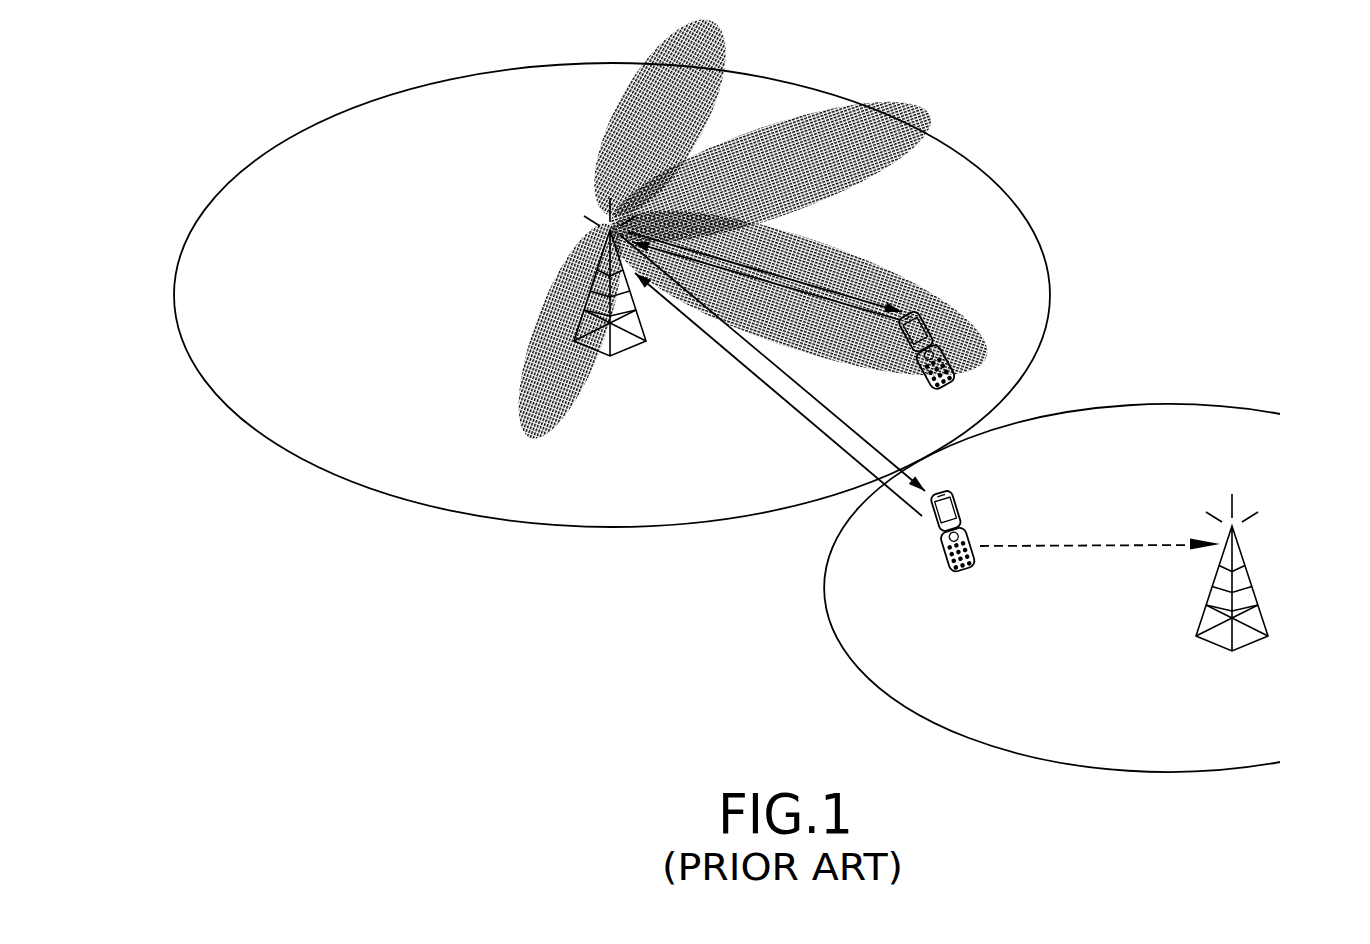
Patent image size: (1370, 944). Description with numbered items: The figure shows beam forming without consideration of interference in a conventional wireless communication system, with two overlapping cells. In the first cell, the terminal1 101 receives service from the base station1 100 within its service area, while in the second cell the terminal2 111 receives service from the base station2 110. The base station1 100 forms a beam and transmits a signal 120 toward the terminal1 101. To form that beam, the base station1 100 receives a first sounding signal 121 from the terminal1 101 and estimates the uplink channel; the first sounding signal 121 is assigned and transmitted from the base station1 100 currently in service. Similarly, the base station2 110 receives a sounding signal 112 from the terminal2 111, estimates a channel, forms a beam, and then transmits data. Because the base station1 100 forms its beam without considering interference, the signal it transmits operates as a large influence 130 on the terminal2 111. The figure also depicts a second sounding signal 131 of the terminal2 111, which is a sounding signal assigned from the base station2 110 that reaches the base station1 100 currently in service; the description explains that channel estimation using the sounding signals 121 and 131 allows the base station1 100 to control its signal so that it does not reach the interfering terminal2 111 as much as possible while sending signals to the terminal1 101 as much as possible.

The base station1 100 is at (584, 320).
The terminal1 101 is at (943, 356).
The base station2 110 is at (1258, 594).
The terminal2 111 is at (936, 546).
The sounding signal 112 is at (1104, 548).
The signal 120 is at (906, 304).
The first sounding signal 121 is at (843, 328).
The influence 130 is at (854, 428).
The second sounding signal 131 is at (817, 457).